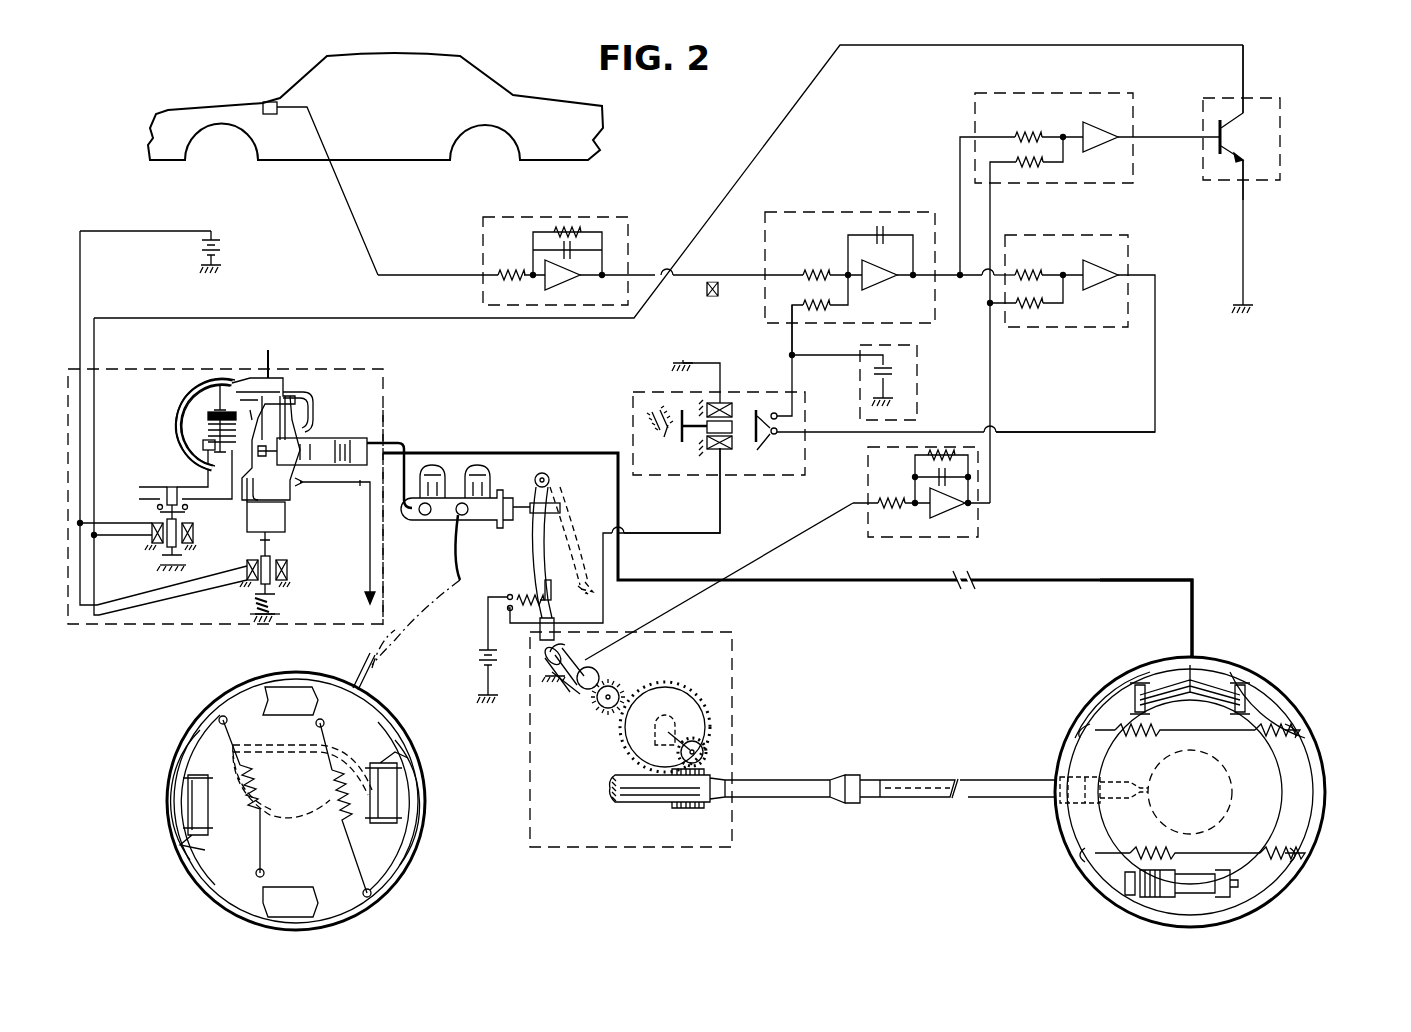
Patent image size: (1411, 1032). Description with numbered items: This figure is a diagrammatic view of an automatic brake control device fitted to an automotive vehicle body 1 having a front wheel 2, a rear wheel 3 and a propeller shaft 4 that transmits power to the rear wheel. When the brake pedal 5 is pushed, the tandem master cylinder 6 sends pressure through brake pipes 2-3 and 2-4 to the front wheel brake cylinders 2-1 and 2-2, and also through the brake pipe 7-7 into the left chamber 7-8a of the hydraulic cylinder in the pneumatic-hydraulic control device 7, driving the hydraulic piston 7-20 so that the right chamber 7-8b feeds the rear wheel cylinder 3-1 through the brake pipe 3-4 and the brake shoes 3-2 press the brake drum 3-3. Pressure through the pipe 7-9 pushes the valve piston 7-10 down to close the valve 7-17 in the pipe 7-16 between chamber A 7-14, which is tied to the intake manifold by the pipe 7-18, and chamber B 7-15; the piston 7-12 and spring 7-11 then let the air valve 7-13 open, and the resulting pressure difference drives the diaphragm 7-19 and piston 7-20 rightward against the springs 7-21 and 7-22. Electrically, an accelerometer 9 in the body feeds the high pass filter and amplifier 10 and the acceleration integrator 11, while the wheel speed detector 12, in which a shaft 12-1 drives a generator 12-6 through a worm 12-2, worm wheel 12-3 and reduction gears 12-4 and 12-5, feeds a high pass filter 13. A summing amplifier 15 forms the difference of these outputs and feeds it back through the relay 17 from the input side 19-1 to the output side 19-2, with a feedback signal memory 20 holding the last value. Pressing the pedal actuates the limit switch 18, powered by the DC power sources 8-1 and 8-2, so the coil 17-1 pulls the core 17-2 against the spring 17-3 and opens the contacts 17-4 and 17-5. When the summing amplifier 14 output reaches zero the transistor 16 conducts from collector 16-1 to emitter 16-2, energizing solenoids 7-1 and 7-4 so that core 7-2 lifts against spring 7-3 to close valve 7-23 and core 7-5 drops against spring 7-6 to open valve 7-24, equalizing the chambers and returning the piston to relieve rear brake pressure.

The automotive vehicle body 1 is at (300, 92).
The accelerometer 9 is at (272, 116).
The DC power source 8-1 is at (222, 250).
The DC power source 8-2 is at (494, 656).
The high pass filter and amplifier 10 is at (628, 222).
The acceleration integrator 11 is at (928, 212).
The summing amplifier (comparator-amplifier) 14 is at (975, 93).
The summing amplifier 15 is at (1128, 238).
The transistor 16 is at (1280, 100).
The collector 16-1 is at (1232, 120).
The emitter 16-2 is at (1232, 152).
The feedback signal memory 20 is at (917, 348).
The input side of feedback circuit 19-1 is at (816, 436).
The output side of feedback circuit 19-2 is at (795, 362).
The relay 17 is at (714, 407).
The coil 17-1 is at (722, 454).
The core 17-2 is at (730, 400).
The spring 17-3 is at (668, 438).
The contact 17-4 is at (774, 436).
The contact 17-5 is at (768, 412).
The high pass filter 13 is at (978, 520).
The pneumatic-hydraulic control device 7 is at (378, 368).
The solenoid 7-1 is at (150, 537).
The core 7-2 is at (160, 532).
The spring 7-3 is at (181, 504).
The solenoid 7-4 is at (246, 564).
The core 7-5 is at (276, 567).
The spring 7-6 is at (275, 602).
The brake pipe 7-7 is at (384, 412).
The left chamber of hydraulic cylinder 7-8a is at (372, 452).
The right chamber of hydraulic cylinder 7-8b is at (330, 462).
The pipe 7-9 is at (268, 378).
The valve piston 7-10 is at (220, 384).
The spring 7-11 is at (208, 430).
The piston 7-12 is at (206, 418).
The air valve 7-13 is at (203, 447).
The chamber A of booster 7-14 is at (286, 504).
The chamber B of booster 7-15 is at (246, 492).
The pipe 7-16 is at (313, 402).
The valve 7-17 is at (204, 400).
The pipe 7-18 is at (368, 578).
The diaphragm 7-19 is at (264, 396).
The hydraulic piston 7-20 is at (312, 484).
The spring 7-21 is at (284, 396).
The spring 7-22 is at (392, 454).
The valve 7-23 is at (170, 494).
The valve (line) 7-24 is at (262, 545).
The tandem master cylinder 6 is at (435, 518).
The brake pedal 5 is at (556, 600).
The limit switch 18 is at (517, 592).
The wheel speed detector 12 is at (732, 636).
The shaft 12-1 is at (625, 784).
The worm 12-2 is at (676, 812).
The worm wheel 12-3 is at (707, 752).
The reduction gear 12-4 is at (705, 689).
The reduction gear 12-5 is at (618, 688).
The generator 12-6 is at (600, 666).
The propeller shaft 4 is at (986, 778).
The front wheel 2 is at (392, 710).
The front wheel brake cylinder 2-1 is at (187, 803).
The front wheel brake cylinder 2-2 is at (398, 792).
The brake pipe 2-3 is at (378, 659).
The brake pipe 2-4 is at (258, 740).
The rear wheel 3 is at (1271, 685).
The rear wheel cylinder 3-1 is at (1215, 682).
The brake shoes 3-2 is at (1320, 744).
The brake drum 3-3 is at (1306, 718).
The brake pipe 3-4 is at (1110, 586).